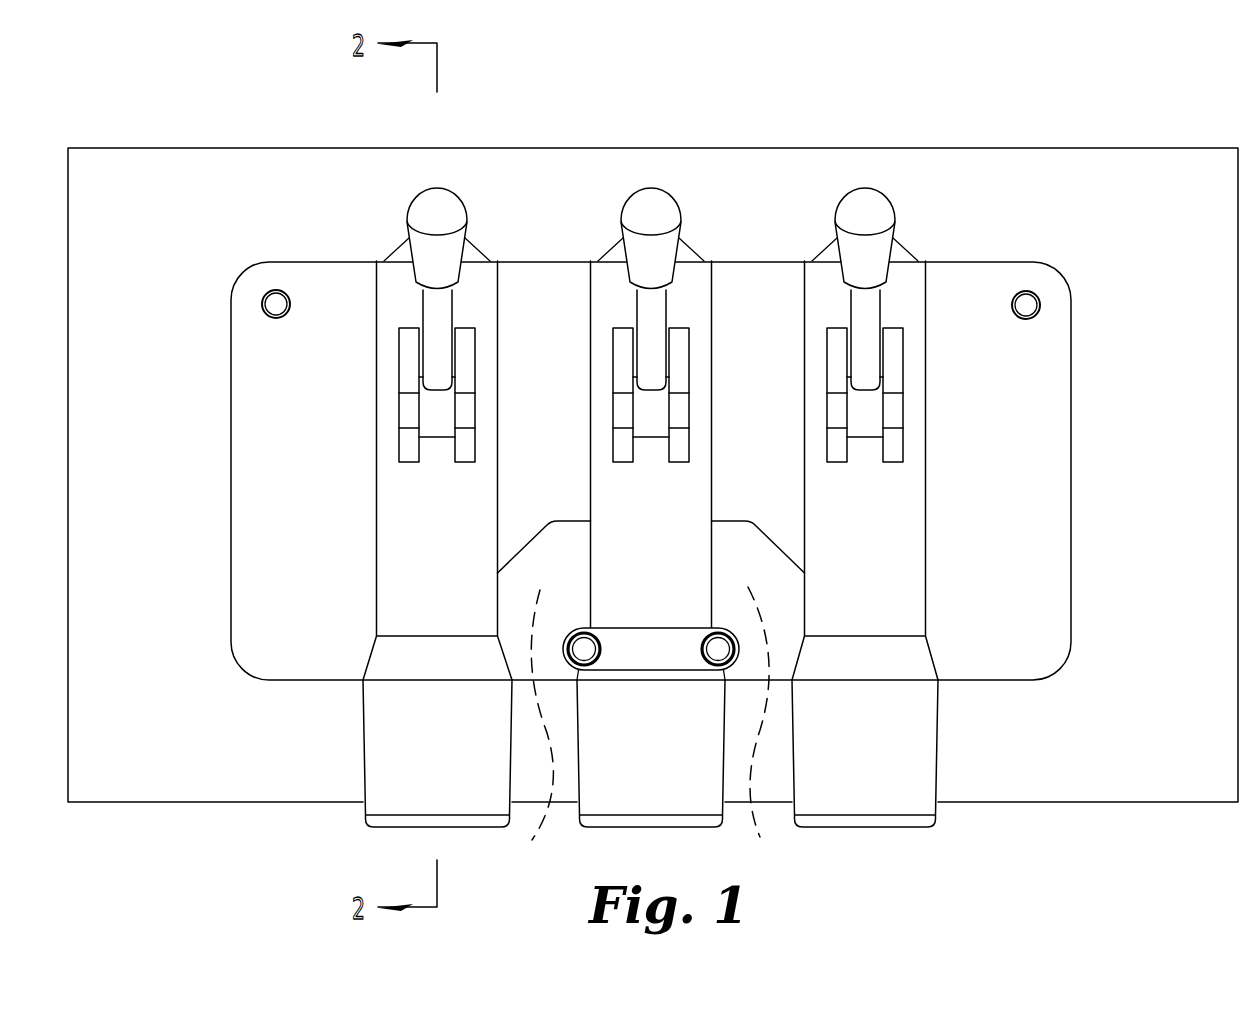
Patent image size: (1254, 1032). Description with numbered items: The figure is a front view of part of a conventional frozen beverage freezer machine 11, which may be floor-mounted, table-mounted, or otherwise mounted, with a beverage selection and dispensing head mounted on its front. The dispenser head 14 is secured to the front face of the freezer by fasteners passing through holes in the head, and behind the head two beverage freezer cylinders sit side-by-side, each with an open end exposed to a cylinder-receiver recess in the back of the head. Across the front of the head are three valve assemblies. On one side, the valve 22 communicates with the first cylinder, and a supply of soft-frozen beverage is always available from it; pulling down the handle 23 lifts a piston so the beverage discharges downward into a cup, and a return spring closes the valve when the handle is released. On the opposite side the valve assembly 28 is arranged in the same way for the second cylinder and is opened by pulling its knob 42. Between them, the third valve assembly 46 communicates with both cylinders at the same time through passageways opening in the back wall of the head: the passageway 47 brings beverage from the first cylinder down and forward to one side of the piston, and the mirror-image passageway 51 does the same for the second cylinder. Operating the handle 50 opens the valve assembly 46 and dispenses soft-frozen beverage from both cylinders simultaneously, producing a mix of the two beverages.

The frozen beverage freezer machine 11 is at (214, 757).
The dispenser head 14 is at (308, 642).
The valve 22 is at (399, 489).
The handle 23 is at (439, 203).
The third valve assembly 46 is at (654, 517).
The handle 50 is at (637, 205).
The valve assembly 28 is at (899, 498).
The knob 42 is at (862, 205).
The passageway 47 is at (530, 730).
The passageway 51 is at (763, 726).